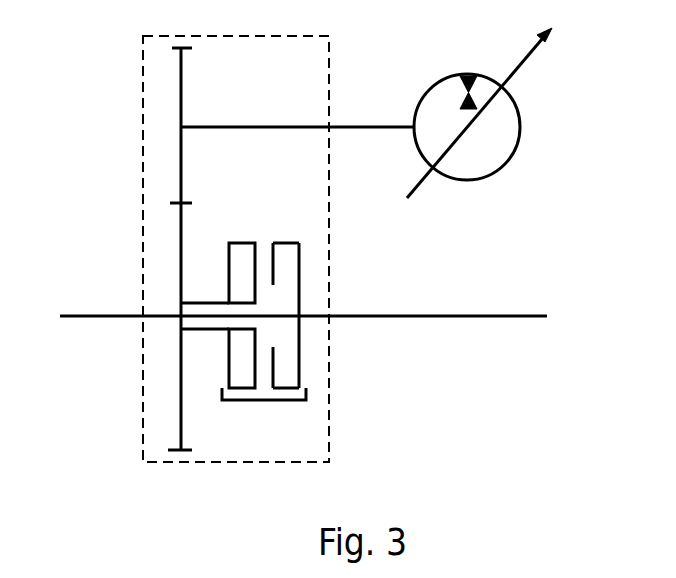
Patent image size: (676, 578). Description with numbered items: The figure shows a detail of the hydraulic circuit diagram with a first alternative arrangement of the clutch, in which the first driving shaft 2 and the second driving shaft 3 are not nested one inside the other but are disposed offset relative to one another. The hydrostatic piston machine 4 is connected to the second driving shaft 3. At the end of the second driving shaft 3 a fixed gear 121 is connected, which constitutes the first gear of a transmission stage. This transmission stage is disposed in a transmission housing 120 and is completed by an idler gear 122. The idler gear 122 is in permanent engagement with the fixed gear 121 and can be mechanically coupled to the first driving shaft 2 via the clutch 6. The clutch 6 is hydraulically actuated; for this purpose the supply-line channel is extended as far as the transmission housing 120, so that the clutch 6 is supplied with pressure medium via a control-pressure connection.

The transmission housing 120 is at (143, 150).
The fixed gear 121 is at (181, 92).
The idler gear 122 is at (181, 400).
The second driving shaft 3 is at (358, 127).
The hydrostatic piston machine 4 is at (518, 117).
The first driving shaft 2 is at (467, 318).
The clutch 6 is at (305, 405).